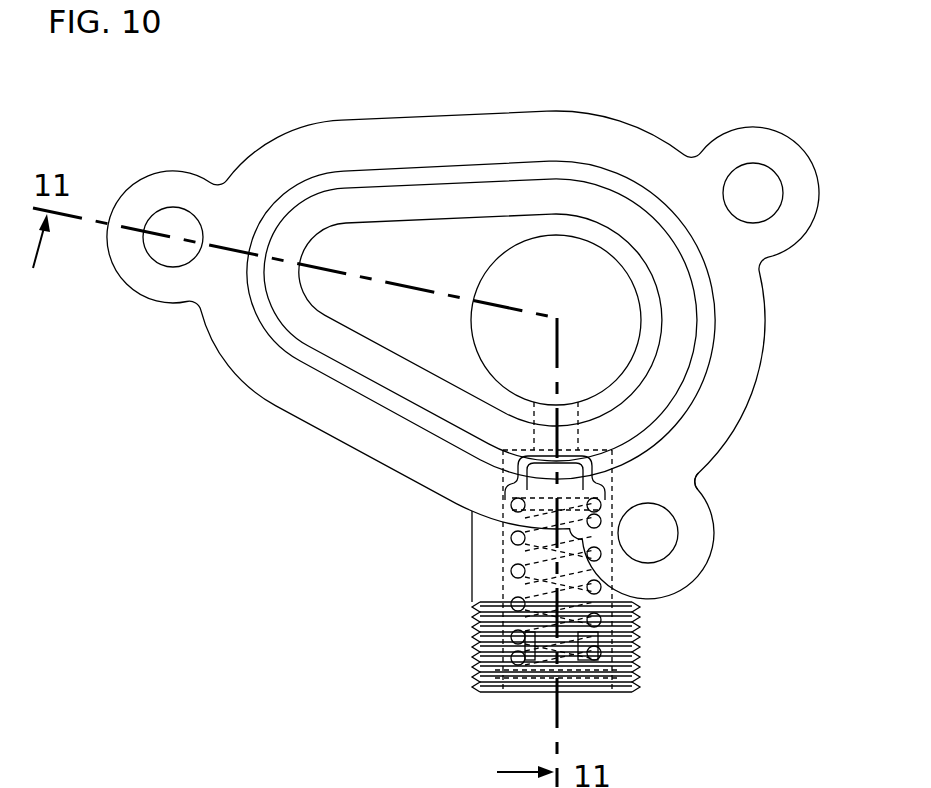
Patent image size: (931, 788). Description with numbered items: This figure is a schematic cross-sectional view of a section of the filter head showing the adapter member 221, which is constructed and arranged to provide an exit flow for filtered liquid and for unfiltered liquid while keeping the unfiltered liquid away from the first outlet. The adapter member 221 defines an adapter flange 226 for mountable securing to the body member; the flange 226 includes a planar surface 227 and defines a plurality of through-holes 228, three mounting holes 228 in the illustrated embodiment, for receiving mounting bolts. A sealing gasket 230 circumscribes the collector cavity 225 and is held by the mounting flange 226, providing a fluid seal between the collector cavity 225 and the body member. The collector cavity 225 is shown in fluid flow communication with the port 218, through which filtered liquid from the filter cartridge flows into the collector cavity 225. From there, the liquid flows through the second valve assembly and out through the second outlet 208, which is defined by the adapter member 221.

The second outlet 208 is at (500, 681).
The port 218 is at (546, 245).
The adapter member 221 is at (172, 139).
The collector cavity 225 is at (332, 323).
The adapter flange 226 is at (708, 461).
The planar surface 227 is at (737, 374).
The through-holes 228 is at (768, 167).
The sealing gasket 230 is at (345, 178).